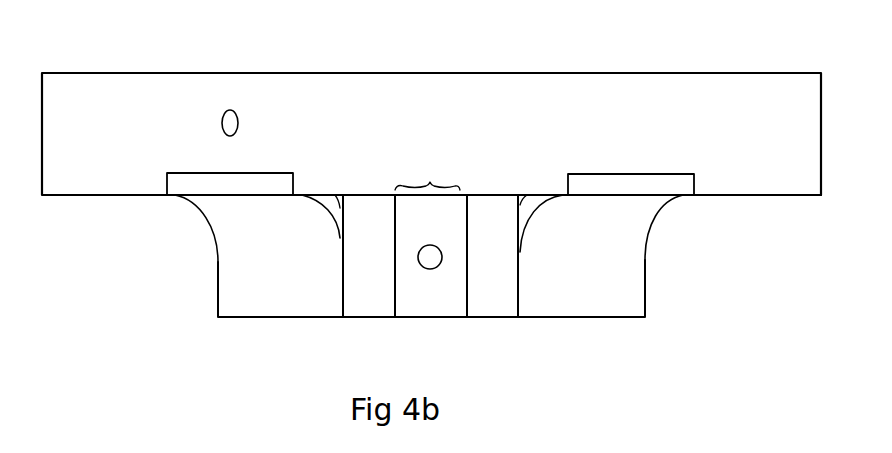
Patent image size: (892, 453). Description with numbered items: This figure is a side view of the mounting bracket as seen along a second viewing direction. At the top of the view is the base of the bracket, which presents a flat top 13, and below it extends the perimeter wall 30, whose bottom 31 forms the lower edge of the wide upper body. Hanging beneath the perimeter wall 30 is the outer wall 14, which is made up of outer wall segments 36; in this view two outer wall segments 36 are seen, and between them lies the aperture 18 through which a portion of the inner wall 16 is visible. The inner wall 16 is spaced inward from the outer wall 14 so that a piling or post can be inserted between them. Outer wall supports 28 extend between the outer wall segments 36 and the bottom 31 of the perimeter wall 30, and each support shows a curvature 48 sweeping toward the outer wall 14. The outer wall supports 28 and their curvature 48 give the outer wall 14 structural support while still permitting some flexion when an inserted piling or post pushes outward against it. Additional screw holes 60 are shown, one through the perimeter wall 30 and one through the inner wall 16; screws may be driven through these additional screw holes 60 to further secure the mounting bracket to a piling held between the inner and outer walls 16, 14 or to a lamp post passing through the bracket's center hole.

The flat top 13 is at (632, 72).
The perimeter wall 30 is at (716, 119).
The bottom of perimeter wall 31 is at (763, 196).
The additional screw holes 60 is at (238, 121).
The outer wall supports 28 is at (278, 262).
The curvature 48 is at (208, 225).
The outer wall segments 36 is at (367, 203).
The inner wall 16 is at (440, 307).
The outer wall 14 is at (488, 207).
The aperture 18 is at (427, 173).